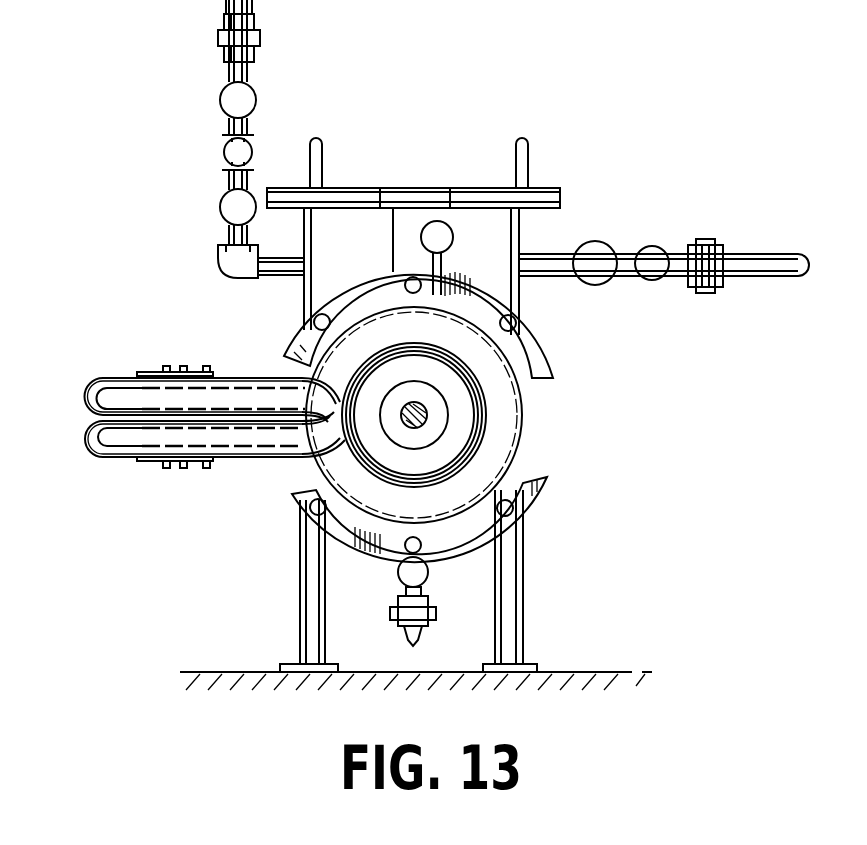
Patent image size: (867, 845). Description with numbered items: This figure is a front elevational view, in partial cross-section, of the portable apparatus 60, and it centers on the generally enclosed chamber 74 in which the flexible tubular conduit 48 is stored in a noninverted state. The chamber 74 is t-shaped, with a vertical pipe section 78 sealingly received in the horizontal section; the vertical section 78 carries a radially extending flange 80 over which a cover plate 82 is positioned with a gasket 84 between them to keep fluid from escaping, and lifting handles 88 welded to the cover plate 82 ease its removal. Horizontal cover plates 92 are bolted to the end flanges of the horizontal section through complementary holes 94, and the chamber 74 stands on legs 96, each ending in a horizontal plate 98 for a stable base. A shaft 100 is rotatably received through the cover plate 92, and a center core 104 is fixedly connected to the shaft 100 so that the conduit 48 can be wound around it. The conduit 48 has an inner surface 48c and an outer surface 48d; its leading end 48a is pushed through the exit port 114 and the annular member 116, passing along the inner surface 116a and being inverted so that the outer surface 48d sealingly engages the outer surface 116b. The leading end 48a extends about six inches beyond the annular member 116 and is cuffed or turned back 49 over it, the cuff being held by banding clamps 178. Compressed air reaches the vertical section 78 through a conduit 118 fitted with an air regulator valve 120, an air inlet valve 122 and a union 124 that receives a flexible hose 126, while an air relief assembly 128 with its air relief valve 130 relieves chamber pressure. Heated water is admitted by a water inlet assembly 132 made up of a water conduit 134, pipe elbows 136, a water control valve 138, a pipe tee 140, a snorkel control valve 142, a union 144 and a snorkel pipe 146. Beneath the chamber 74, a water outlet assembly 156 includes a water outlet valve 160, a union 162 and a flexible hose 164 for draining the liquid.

The flexible tubular conduit 48 is at (474, 403).
The leading end 48a is at (187, 371).
The inner surface 48c is at (88, 396).
The outer surface 48d is at (236, 434).
The cuffed or turned back portion 49 is at (82, 426).
The rotary valve assembly 60 is at (608, 442).
The generally enclosed chamber 74 is at (590, 241).
The vertical pipe section 78 is at (560, 238).
The radially extending flange 80 is at (275, 205).
The cover plate 82 is at (402, 190).
The gasket 84 is at (450, 190).
The lifting handles 88 is at (322, 173).
The horizontal cover plate 92 is at (530, 340).
The holes 94 is at (408, 286).
The legs 96 is at (300, 594).
The horizontal plate 98 is at (302, 674).
The shaft 100 is at (408, 404).
The center core 104 is at (438, 424).
The exit port 114 is at (302, 442).
The annular member or inversion pipe 116 is at (258, 378).
The inner surface 116a is at (201, 399).
The outer surface 116b is at (258, 464).
The conduit 118 is at (675, 280).
The air regulator valve 120 is at (607, 249).
The air inlet valve 122 is at (648, 247).
The union 124 is at (708, 245).
The flexible hose 126 is at (745, 256).
The air relief assembly 128 is at (456, 236).
The air relief valve 130 is at (443, 248).
The water inlet assembly 132 is at (282, 71).
The water conduit 134 is at (281, 258).
The pipe elbows 136 is at (236, 266).
The water control valve 138 is at (219, 210).
The pipe tee 140 is at (226, 150).
The snorkel control valve 142 is at (219, 100).
The union 144 is at (219, 39).
The snorkel pipe 146 is at (248, 7).
The water outlet assembly 156 is at (440, 567).
The water outlet valve 160 is at (398, 576).
The union 162 is at (392, 617).
The flexible hose 164 is at (424, 636).
The banding clamps 178 is at (163, 366).